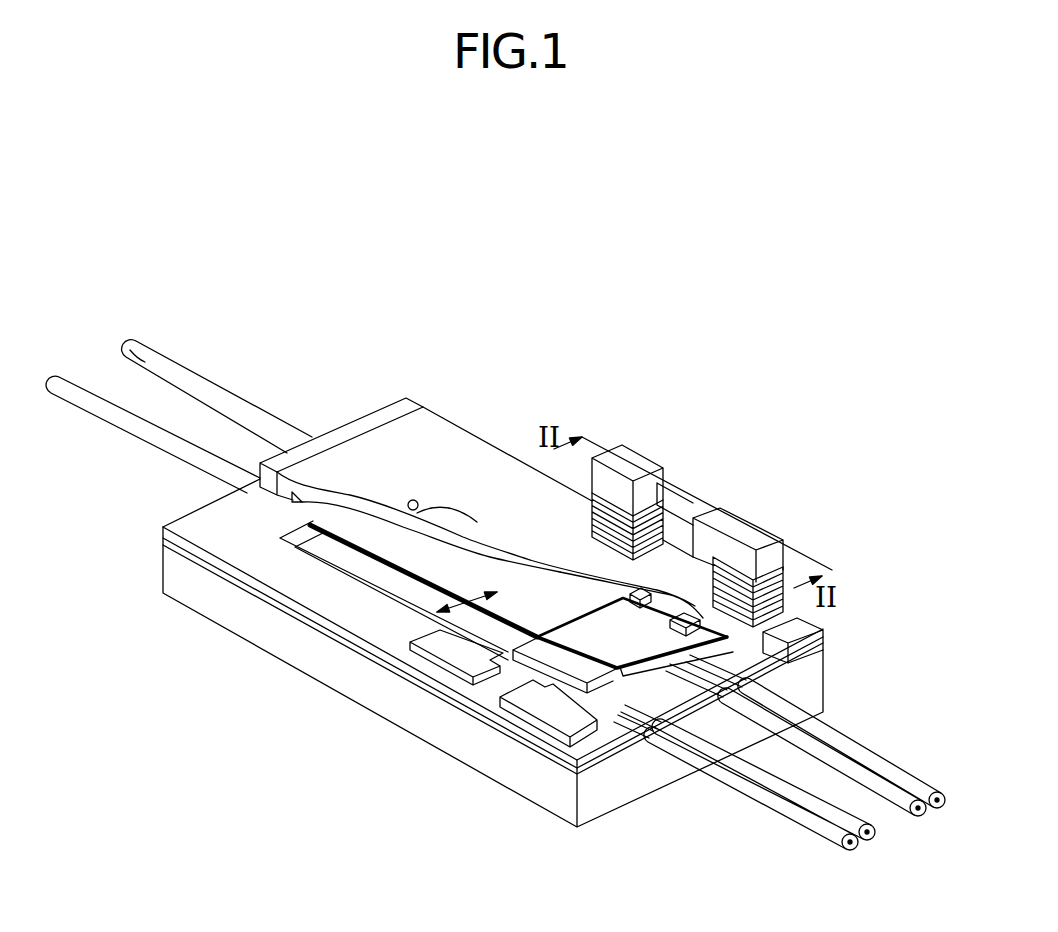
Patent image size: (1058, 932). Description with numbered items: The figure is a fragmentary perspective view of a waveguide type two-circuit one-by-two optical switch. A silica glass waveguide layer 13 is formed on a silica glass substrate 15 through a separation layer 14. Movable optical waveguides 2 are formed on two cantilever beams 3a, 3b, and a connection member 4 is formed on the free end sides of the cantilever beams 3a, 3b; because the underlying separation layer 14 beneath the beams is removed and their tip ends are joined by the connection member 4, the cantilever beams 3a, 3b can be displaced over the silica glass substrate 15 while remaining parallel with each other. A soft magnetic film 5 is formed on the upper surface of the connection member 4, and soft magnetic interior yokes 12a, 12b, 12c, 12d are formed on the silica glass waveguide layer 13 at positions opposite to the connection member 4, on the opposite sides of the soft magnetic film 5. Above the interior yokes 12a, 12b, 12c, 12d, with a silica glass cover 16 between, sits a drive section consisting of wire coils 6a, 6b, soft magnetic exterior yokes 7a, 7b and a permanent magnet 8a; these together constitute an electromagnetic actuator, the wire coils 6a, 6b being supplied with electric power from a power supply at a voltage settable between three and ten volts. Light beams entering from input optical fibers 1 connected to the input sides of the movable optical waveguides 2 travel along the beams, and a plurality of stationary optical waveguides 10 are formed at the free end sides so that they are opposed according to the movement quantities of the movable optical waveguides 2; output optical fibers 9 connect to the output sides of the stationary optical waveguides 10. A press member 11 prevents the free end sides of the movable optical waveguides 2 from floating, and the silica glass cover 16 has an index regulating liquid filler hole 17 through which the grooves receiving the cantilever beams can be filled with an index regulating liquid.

The input optical fibers 1 is at (143, 358).
The movable optical waveguides 2 is at (274, 490).
The cantilever beam 3a is at (495, 548).
The cantilever beam 3b is at (338, 510).
The connection member 4 is at (540, 650).
The soft magnetic film 5 is at (614, 637).
The wire coil 6a is at (617, 520).
The wire coil 6b is at (793, 590).
The soft magnetic exterior yoke 7a is at (655, 480).
The soft magnetic exterior yoke 7b is at (762, 530).
The permanent magnet 8a is at (693, 490).
The output optical fibers 9 is at (767, 790).
The stationary optical waveguides 10 is at (693, 677).
The press member 11 is at (630, 707).
The soft magnetic interior yoke 12a is at (660, 583).
The soft magnetic interior yoke 12b is at (783, 627).
The soft magnetic interior yoke 12c is at (430, 650).
The soft magnetic interior yoke 12d is at (540, 705).
The silica glass waveguide layer 13 is at (455, 705).
The separation layer 14 is at (330, 642).
The silica glass substrate 15 is at (257, 623).
The silica glass cover 16 is at (262, 603).
The index regulating liquid filler hole 17 is at (413, 499).